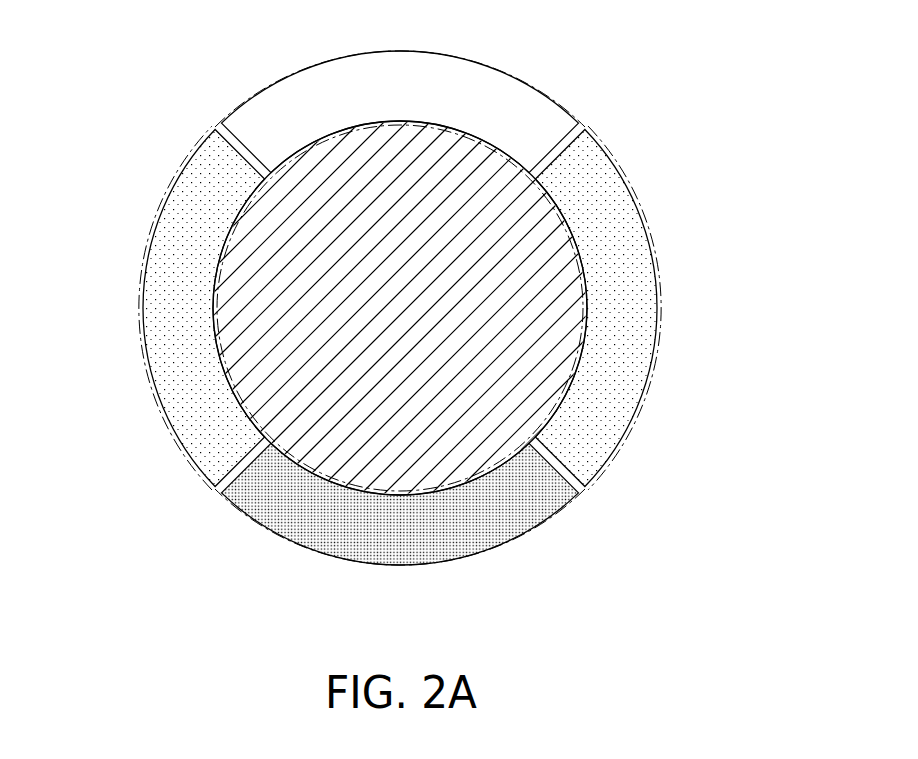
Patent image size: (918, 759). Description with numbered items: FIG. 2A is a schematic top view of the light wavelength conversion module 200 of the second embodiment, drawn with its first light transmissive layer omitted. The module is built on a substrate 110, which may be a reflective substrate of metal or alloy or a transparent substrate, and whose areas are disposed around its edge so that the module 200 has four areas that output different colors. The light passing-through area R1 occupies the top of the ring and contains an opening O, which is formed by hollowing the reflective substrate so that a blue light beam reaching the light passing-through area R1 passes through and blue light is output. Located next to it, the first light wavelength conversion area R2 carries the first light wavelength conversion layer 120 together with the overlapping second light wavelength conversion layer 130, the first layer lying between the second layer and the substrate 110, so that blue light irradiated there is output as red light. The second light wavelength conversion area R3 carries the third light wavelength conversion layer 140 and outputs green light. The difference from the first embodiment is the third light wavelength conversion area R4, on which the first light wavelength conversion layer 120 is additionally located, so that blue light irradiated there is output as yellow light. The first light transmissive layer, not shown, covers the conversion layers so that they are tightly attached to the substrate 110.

The light wavelength conversion module 200 is at (786, 590).
The substrate 110 is at (478, 168).
The first light wavelength conversion layer 120 is at (505, 520).
The second light wavelength conversion layer 130 is at (172, 309).
The third light wavelength conversion layer 140 is at (632, 313).
The light passing-through area R1 is at (408, 45).
The first light wavelength conversion area R2 is at (160, 425).
The second light wavelength conversion area R3 is at (640, 423).
The third light wavelength conversion area R4 is at (412, 573).
The opening O is at (304, 98).